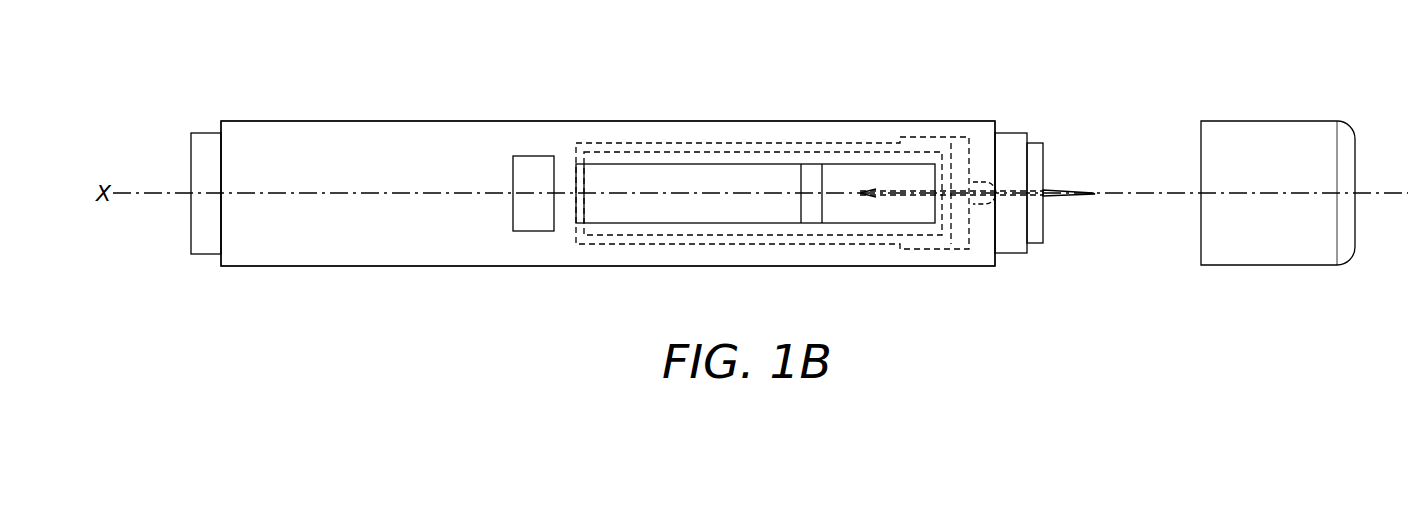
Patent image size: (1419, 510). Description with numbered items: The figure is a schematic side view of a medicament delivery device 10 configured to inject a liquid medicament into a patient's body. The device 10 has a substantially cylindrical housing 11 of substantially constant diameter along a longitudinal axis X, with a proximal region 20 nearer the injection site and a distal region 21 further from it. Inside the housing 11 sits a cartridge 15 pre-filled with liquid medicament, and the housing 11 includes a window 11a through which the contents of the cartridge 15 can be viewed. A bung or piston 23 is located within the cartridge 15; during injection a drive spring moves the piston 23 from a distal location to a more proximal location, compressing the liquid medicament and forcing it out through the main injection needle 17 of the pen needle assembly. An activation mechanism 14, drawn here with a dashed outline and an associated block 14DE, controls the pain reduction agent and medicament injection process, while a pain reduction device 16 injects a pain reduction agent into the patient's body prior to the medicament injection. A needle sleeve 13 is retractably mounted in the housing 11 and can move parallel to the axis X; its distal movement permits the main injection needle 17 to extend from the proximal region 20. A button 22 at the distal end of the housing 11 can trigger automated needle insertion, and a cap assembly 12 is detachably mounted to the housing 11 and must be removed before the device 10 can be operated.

The device 10 is at (952, 80).
The housing 11 is at (805, 128).
The window 11a is at (648, 164).
The cap assembly 12 is at (1272, 130).
The needle sleeve 13 is at (1018, 140).
The activation mechanism 14 is at (617, 243).
The drive electronics 14DE is at (533, 231).
The cartridge 15 is at (700, 236).
The pain reduction device 16 is at (1037, 234).
The main injection needle 17 is at (1068, 190).
The proximal region 20 is at (981, 258).
The distal region 21 is at (238, 258).
The button 22 is at (205, 245).
The piston 23 is at (812, 212).